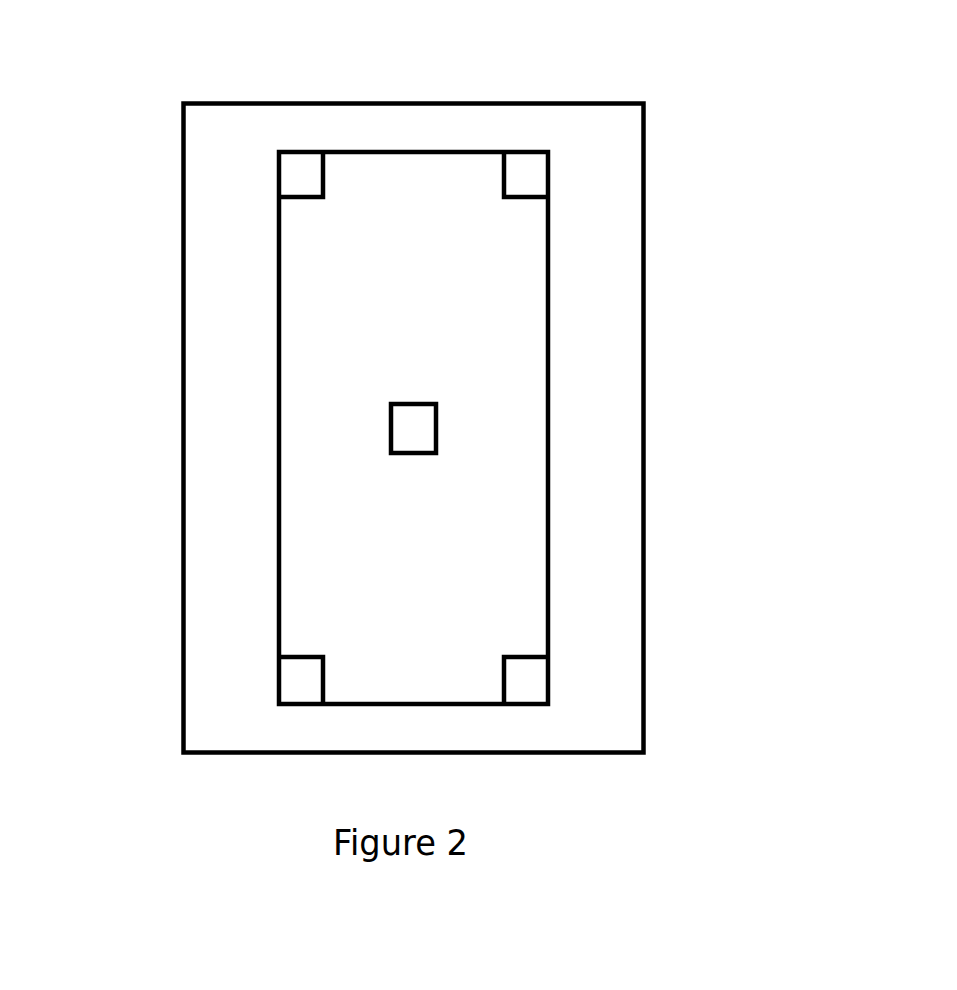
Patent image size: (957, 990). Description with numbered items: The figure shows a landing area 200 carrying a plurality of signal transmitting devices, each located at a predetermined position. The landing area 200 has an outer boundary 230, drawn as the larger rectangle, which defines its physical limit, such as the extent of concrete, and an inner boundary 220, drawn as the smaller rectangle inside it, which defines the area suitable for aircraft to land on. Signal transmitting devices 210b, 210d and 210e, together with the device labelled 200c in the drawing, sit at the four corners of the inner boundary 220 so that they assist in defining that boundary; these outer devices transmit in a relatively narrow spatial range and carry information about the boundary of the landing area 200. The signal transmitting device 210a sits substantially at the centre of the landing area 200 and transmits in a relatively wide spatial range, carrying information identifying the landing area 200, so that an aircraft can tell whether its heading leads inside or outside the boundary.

The landing area 200 is at (356, 56).
The outer boundary 230 is at (643, 307).
The inner boundary 220 is at (279, 369).
The signal transmitting device 210a is at (412, 428).
The signal transmitting device 210b is at (527, 174).
The bottom-right corner sensor element 200c is at (527, 683).
The signal transmitting device 210d is at (300, 679).
The signal transmitting device 210e is at (300, 174).